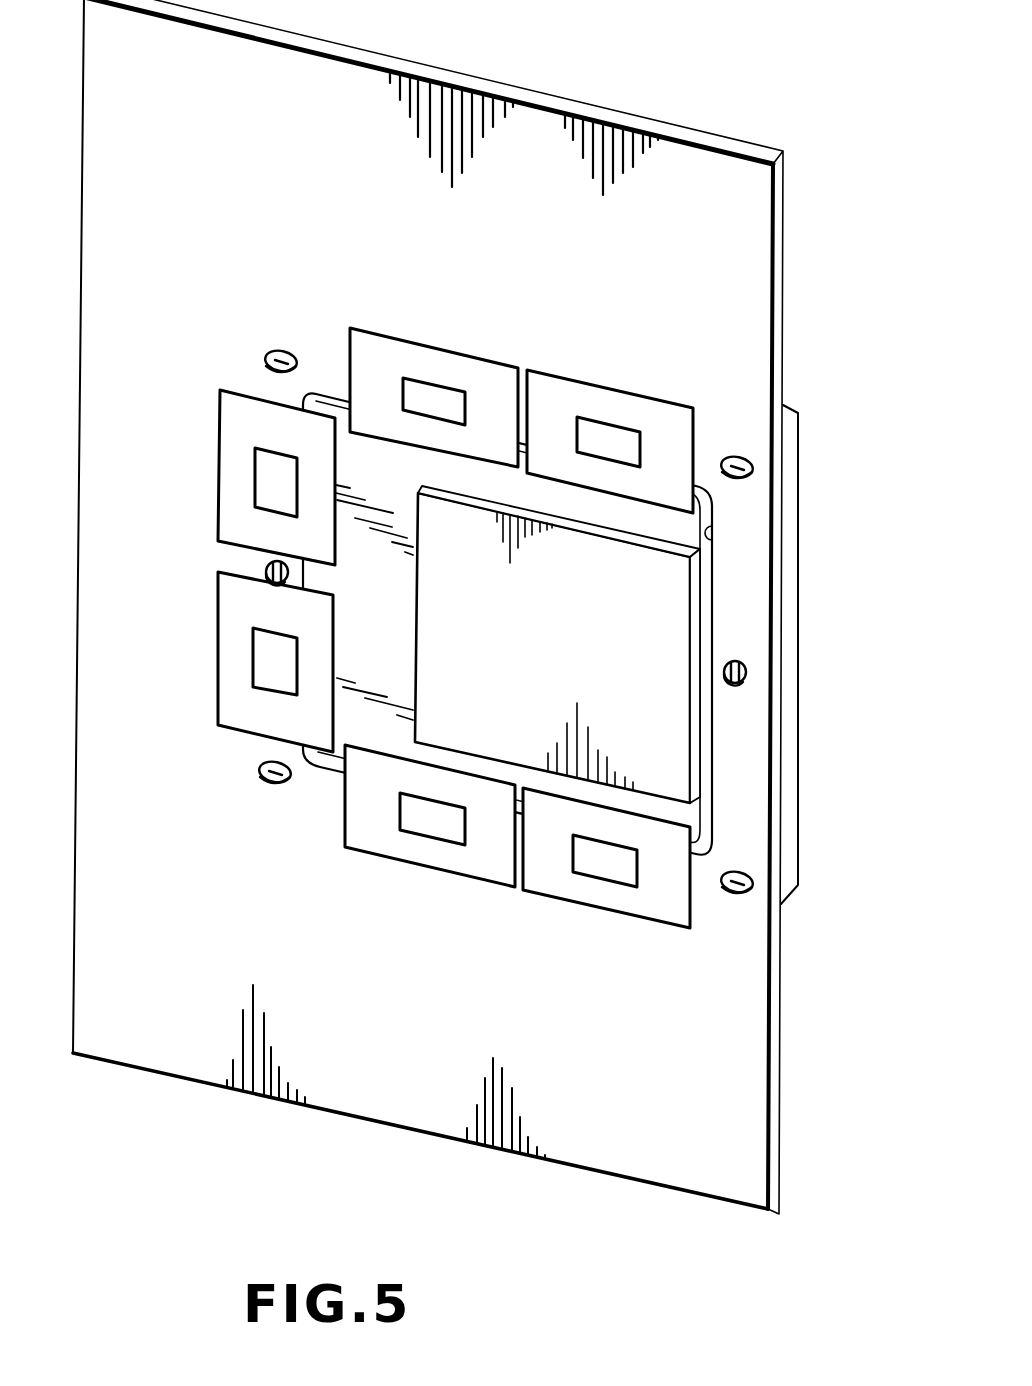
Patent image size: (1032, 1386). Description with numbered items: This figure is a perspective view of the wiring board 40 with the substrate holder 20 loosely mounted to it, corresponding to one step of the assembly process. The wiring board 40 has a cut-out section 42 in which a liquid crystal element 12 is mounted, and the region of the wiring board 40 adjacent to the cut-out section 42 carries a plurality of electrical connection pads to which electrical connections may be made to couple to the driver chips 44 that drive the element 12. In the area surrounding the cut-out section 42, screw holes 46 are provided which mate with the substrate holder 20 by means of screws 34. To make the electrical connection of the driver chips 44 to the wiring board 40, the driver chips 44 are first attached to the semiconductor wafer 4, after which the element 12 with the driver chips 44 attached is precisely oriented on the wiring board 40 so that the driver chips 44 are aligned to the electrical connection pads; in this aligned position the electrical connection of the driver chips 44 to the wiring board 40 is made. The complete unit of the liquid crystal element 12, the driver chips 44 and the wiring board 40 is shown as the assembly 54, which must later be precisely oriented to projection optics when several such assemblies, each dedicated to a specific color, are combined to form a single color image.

The semiconductor wafer 4 is at (384, 660).
The liquid crystal element 12 is at (549, 656).
The substrate holder 20 is at (800, 515).
The screws 34 is at (266, 578).
The wiring board 40 is at (282, 179).
The cut-out section 42 is at (712, 540).
The driver chips 44 is at (603, 434).
The screw holes 46 is at (280, 352).
The assembly 54 is at (712, 130).